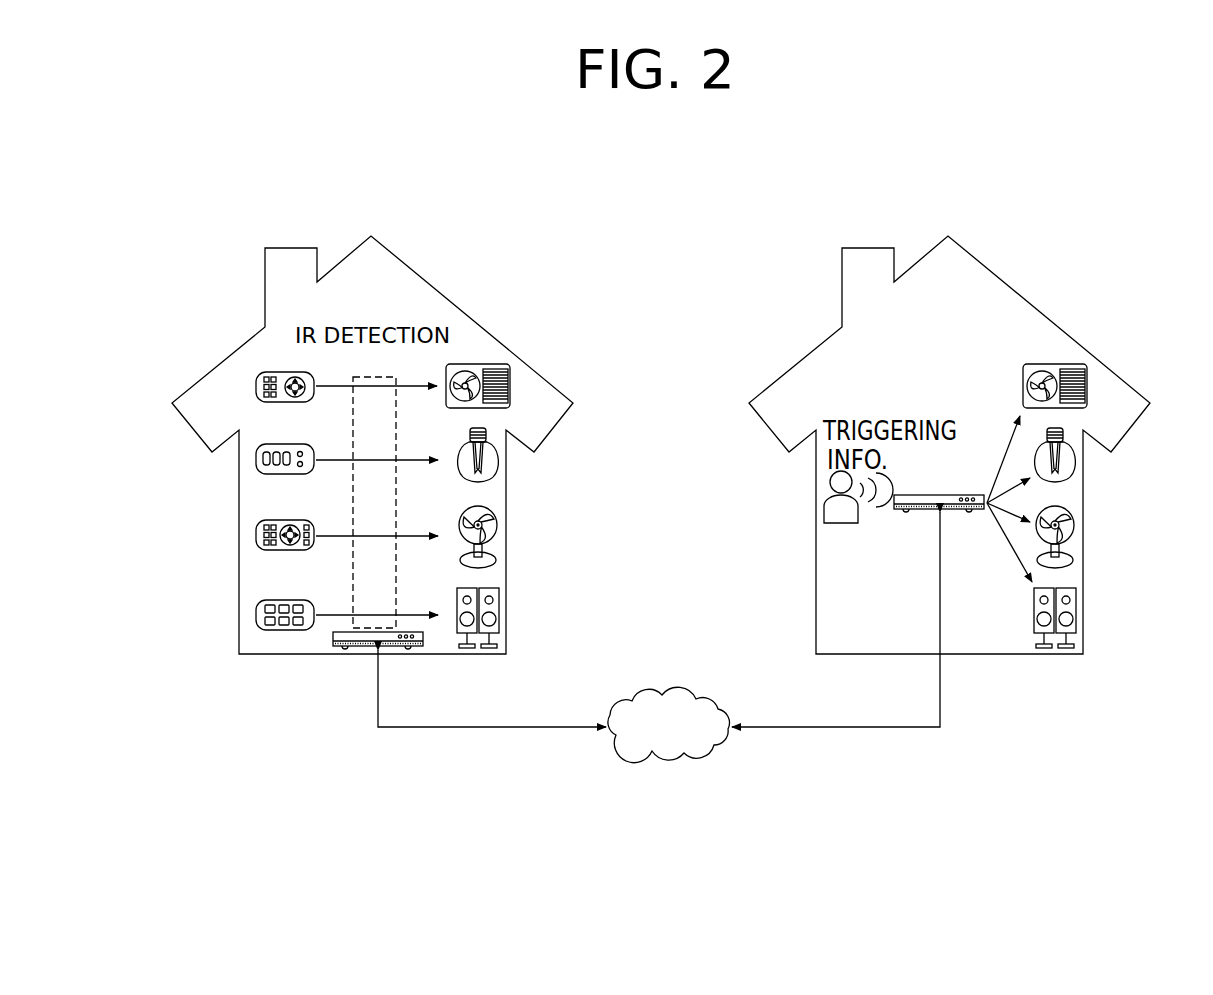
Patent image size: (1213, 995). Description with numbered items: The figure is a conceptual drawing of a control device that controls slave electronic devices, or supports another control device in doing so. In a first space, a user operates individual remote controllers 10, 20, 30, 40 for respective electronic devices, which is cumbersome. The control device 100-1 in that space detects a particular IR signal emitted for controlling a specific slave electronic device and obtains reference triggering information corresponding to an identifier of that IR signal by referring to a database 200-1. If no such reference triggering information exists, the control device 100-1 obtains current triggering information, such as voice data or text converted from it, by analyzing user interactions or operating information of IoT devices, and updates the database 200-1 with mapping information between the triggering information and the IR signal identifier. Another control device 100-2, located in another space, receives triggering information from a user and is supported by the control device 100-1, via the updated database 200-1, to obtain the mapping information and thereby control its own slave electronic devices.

The remote controller 10 is at (228, 387).
The remote controller 20 is at (228, 460).
The remote controller 30 is at (228, 537).
The remote controller 40 is at (228, 618).
The control device 100-1 is at (413, 649).
The another control device 100-2 is at (927, 494).
The database 200-1 is at (669, 763).